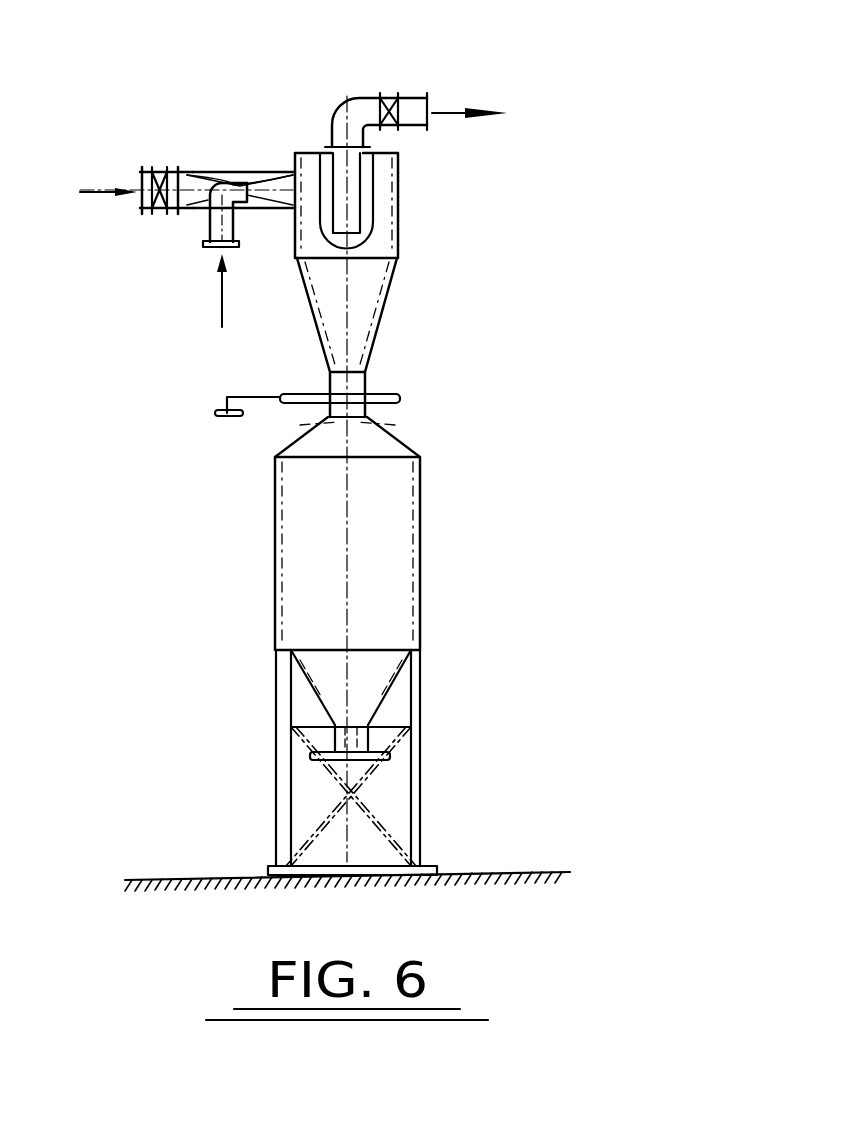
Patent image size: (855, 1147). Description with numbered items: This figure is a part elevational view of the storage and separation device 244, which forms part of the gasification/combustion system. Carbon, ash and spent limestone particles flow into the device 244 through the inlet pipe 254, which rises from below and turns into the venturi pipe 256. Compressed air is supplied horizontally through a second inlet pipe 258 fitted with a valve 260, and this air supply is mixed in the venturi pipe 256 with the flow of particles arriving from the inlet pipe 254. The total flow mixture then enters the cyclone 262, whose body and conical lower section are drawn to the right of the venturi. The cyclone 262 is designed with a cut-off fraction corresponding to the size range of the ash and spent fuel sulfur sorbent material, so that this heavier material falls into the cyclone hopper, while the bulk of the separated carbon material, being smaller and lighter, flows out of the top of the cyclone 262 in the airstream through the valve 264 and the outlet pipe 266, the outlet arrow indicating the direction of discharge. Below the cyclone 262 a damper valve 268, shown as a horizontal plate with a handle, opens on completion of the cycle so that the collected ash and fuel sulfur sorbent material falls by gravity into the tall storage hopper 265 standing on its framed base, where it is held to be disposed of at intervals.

The storage and separation device 244 is at (545, 400).
The inlet pipe 254 is at (210, 252).
The venturi pipe 256 is at (255, 202).
The inlet pipe 258 is at (140, 182).
The valve 260 is at (161, 170).
The cyclone 262 is at (372, 307).
The valve 264 is at (384, 97).
The collection tank 265 is at (403, 567).
The outlet pipe 266 is at (430, 100).
The damper valve 268 is at (397, 397).